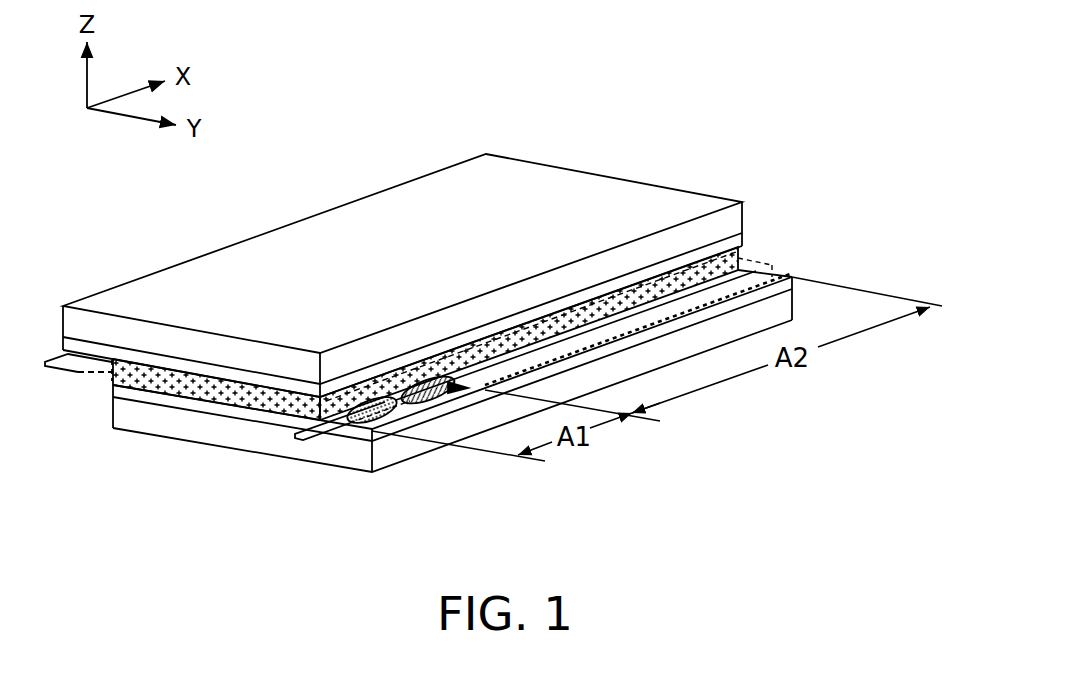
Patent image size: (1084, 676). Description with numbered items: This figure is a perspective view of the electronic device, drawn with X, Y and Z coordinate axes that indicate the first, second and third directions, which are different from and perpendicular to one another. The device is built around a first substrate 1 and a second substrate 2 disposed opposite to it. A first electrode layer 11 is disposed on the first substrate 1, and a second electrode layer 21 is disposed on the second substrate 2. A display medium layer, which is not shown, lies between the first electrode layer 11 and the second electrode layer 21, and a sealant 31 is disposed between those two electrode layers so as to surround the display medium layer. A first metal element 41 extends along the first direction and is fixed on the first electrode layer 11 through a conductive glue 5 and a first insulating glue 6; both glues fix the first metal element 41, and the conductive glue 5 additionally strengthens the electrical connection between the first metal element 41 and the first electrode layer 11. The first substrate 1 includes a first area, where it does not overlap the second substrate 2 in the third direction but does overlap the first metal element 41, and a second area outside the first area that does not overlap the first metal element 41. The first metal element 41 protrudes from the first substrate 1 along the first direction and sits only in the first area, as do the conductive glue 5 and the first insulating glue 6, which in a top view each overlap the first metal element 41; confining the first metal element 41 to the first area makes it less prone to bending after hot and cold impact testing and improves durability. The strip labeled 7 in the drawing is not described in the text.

The first substrate 1 is at (792, 311).
The first electrode layer 11 is at (792, 283).
The second substrate 2 is at (742, 216).
The second electrode layer 21 is at (742, 241).
The sealant 31 is at (155, 385).
The first metal element 41 is at (298, 440).
The conductive glue 5 is at (430, 380).
The first insulating glue 6 is at (375, 398).
The bus bar strip 7 is at (490, 383).